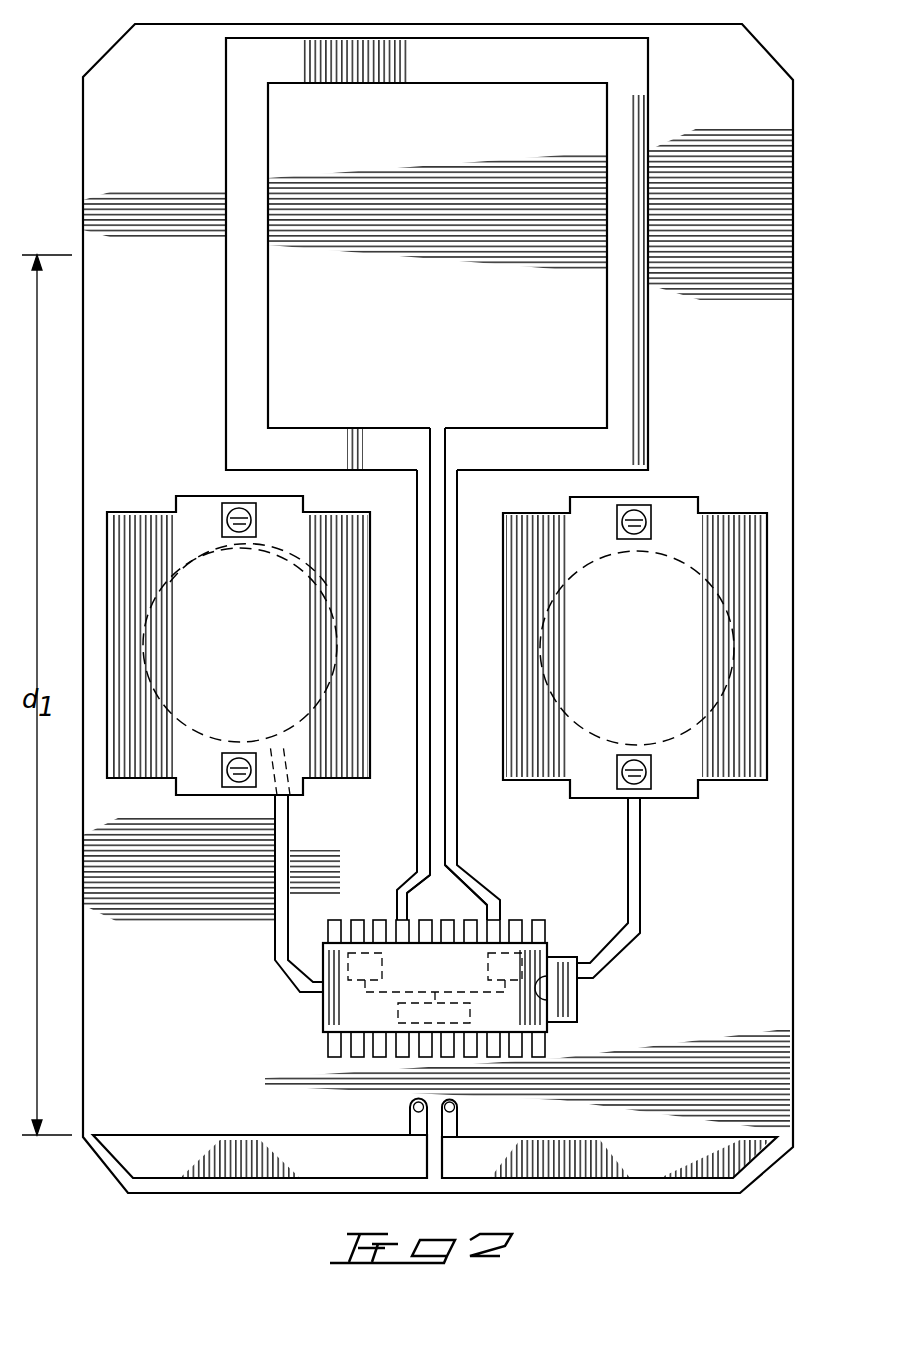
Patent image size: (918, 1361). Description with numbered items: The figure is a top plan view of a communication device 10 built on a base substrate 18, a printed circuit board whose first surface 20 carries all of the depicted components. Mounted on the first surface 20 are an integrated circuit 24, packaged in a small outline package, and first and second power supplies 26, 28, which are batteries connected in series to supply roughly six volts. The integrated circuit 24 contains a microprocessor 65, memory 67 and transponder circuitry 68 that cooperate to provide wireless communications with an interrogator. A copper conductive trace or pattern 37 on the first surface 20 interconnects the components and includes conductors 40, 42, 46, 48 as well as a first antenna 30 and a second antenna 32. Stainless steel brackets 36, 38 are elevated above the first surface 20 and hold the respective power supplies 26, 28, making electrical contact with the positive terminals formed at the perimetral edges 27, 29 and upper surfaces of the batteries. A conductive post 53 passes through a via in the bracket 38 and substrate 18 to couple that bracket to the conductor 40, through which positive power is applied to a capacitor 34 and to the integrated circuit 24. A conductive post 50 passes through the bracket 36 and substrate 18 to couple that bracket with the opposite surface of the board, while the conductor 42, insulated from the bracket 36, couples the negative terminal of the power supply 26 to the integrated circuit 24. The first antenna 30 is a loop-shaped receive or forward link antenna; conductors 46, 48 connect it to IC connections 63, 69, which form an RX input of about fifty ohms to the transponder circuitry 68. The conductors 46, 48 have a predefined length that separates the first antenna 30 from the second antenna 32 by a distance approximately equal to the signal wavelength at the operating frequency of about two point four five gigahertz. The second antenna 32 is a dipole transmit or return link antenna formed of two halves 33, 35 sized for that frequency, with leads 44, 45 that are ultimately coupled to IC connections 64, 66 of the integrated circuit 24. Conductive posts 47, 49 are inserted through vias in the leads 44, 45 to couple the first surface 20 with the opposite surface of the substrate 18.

The communication device 10 is at (46, 102).
The base substrate 18 is at (725, 955).
The first surface 20 is at (163, 999).
The integrated circuit 24 is at (409, 943).
The first power supply 26 is at (190, 748).
The edge of first power supply 27 is at (328, 582).
The second power supply 28 is at (669, 757).
The edge of second power supply 29 is at (708, 580).
The first antenna 30 is at (215, 323).
The second antenna 32 is at (645, 1200).
The first half of second antenna 33 is at (160, 1155).
The capacitor 34 is at (563, 965).
The second half of second antenna 35 is at (620, 1160).
The bracket 36 is at (123, 755).
The conductive trace or pattern 37 is at (652, 990).
The bracket 38 is at (432, 890).
The conductor 40 is at (635, 855).
The conductor 42 is at (292, 832).
The lead of second antenna 44 is at (410, 1128).
The lead of second antenna 45 is at (458, 1122).
The conductor 46 is at (417, 648).
The conductive post 47 is at (412, 1103).
The conductor 48 is at (455, 625).
The conductive post 49 is at (455, 1105).
The conductive post 50 is at (224, 514).
The conductive post 53 is at (617, 766).
The IC connection 63 is at (400, 928).
The IC connection 64 is at (401, 927).
The microprocessor 65 is at (322, 972).
The IC connection 66 is at (460, 922).
The memory 67 is at (488, 962).
The transponder circuitry 68 is at (398, 1010).
The IC connection 69 is at (496, 926).